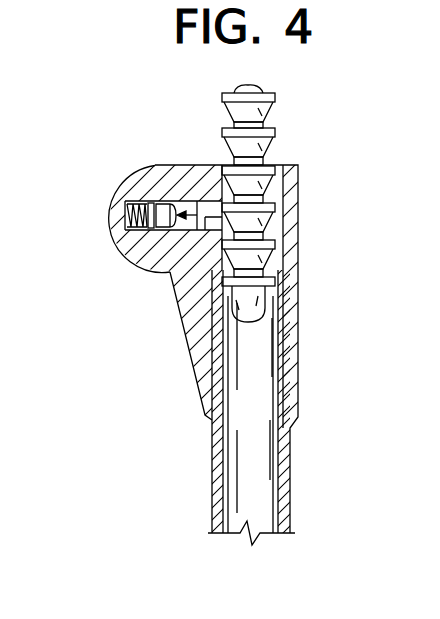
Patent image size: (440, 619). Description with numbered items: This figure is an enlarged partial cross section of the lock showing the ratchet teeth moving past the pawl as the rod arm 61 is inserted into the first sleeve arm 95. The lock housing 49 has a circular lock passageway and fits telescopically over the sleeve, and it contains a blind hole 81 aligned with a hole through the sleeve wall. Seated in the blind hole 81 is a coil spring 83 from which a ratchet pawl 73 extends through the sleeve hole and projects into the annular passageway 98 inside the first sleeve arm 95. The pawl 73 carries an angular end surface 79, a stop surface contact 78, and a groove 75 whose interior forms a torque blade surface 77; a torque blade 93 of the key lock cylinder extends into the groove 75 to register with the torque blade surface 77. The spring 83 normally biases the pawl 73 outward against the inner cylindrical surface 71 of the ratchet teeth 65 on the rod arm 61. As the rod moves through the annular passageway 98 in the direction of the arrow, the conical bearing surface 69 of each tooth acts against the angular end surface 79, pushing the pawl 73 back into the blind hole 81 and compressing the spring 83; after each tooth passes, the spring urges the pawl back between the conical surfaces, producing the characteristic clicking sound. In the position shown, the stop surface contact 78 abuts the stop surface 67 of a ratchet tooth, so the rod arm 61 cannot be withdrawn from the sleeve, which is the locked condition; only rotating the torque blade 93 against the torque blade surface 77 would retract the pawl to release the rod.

The lock housing 49 is at (130, 172).
The rod arm 61 is at (274, 96).
The ratchet teeth 65 is at (280, 129).
The stop surface 67 is at (276, 166).
The conical bearing surface 69 is at (272, 259).
The inner cylindrical surface 71 is at (233, 123).
The ratchet pawl 73 is at (203, 197).
The groove 75 is at (178, 290).
The torque blade surface 77 is at (171, 200).
The stop surface contact 78 is at (252, 232).
The angular end surface 79 is at (272, 200).
The blind hole 81 is at (150, 229).
The coil spring 83 is at (123, 222).
The torque blade 93 is at (166, 231).
The first sleeve arm 95 is at (290, 508).
The annular passageway 98 is at (260, 452).